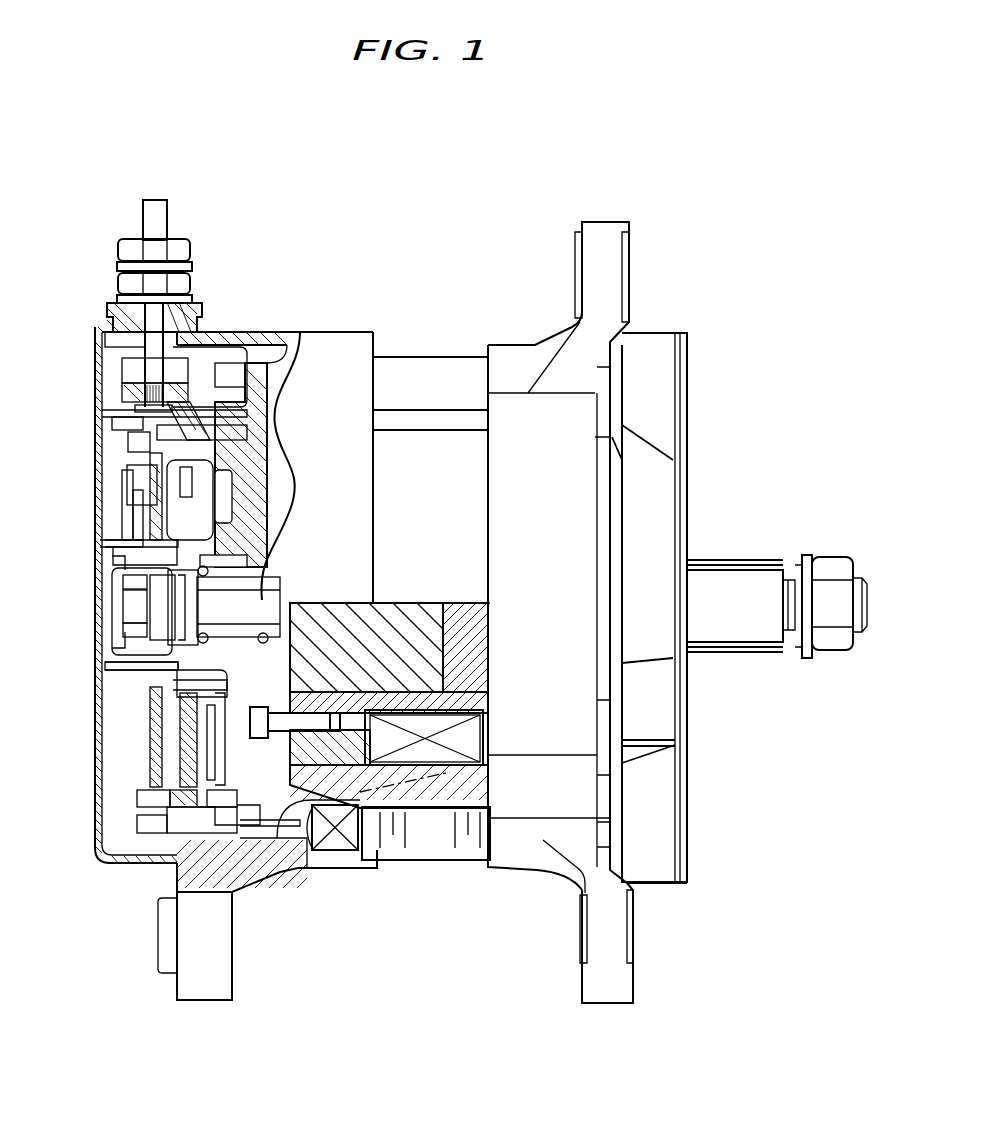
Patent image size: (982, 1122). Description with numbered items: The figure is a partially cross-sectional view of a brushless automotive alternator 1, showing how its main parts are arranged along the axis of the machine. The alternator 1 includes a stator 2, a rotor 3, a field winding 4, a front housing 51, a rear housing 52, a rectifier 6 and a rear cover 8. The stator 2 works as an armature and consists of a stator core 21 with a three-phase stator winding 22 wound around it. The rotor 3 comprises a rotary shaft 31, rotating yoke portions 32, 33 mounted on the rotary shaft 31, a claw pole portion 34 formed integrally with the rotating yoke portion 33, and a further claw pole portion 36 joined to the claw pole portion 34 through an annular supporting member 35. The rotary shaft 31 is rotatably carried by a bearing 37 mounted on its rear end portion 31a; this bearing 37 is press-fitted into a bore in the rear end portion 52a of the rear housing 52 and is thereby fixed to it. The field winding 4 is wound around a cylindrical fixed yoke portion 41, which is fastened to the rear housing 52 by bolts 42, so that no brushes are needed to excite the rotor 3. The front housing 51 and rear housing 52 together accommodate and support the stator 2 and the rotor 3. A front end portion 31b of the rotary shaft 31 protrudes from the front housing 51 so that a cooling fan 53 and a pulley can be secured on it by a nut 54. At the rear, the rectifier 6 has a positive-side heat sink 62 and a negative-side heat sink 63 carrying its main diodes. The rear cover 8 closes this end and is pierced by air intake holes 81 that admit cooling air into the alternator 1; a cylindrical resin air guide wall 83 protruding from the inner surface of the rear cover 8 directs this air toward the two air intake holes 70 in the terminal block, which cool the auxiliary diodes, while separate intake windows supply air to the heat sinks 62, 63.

The brushless automotive alternator 1 is at (548, 198).
The stator 2 is at (445, 743).
The rotor 3 is at (381, 646).
The field winding 4 is at (397, 762).
The rectifier 6 is at (146, 741).
The rear cover 8 is at (100, 862).
The stator core 21 is at (432, 864).
The three-phase stator winding 22 is at (337, 790).
The rotary shaft 31 is at (258, 612).
The rear end portion of the rotary shaft 31a is at (140, 683).
The front end portion of the rotary shaft 31b is at (727, 592).
The rotating yoke portion 32 is at (398, 625).
The rotating yoke portion 33 is at (462, 630).
The claw pole portion 34 is at (447, 790).
The annular supporting member 35 is at (403, 808).
The claw pole portion 36 is at (337, 822).
The bearing 37 is at (218, 808).
The fixed yoke portion 41 is at (272, 790).
The bolts 42 is at (313, 722).
The front housing 51 is at (525, 856).
The rear housing 52 is at (178, 878).
The rear end portion of the rear housing 52a is at (245, 548).
The cooling fan 53 is at (660, 795).
The nut 54 is at (835, 560).
The positive-side heat sink 62 is at (142, 452).
The negative-side heat sink 63 is at (127, 484).
The air intake holes 70 is at (104, 553).
The air intake holes 81 is at (98, 583).
The air guide wall 83 is at (120, 541).